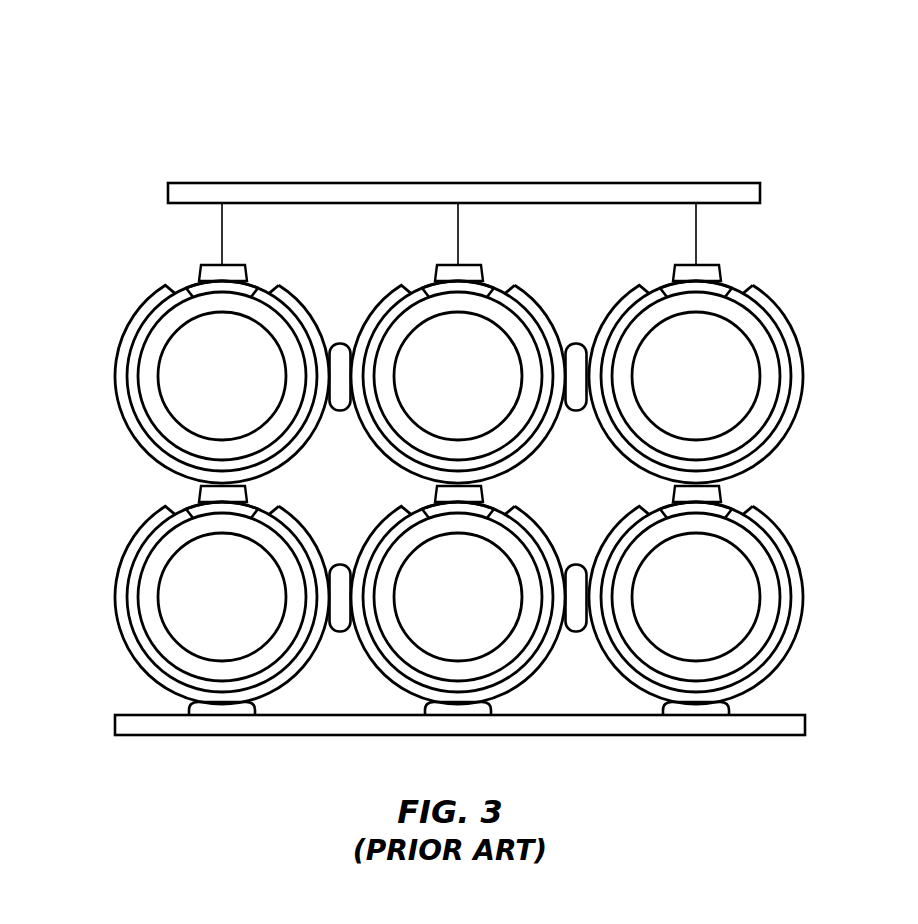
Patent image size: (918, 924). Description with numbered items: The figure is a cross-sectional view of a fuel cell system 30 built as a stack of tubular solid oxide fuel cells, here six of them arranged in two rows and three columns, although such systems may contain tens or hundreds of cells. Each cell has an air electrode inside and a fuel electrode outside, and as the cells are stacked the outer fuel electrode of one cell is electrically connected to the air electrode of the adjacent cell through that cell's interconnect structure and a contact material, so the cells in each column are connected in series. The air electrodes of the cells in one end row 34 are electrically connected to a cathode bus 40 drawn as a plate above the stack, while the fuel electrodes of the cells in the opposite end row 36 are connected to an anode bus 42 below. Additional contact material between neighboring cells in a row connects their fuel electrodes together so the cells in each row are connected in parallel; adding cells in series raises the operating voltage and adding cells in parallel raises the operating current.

The fuel cell system 30 is at (185, 103).
The end row 34 is at (100, 361).
The opposite end row 36 is at (100, 611).
The cathode bus 40 is at (636, 192).
The anode bus 42 is at (678, 723).